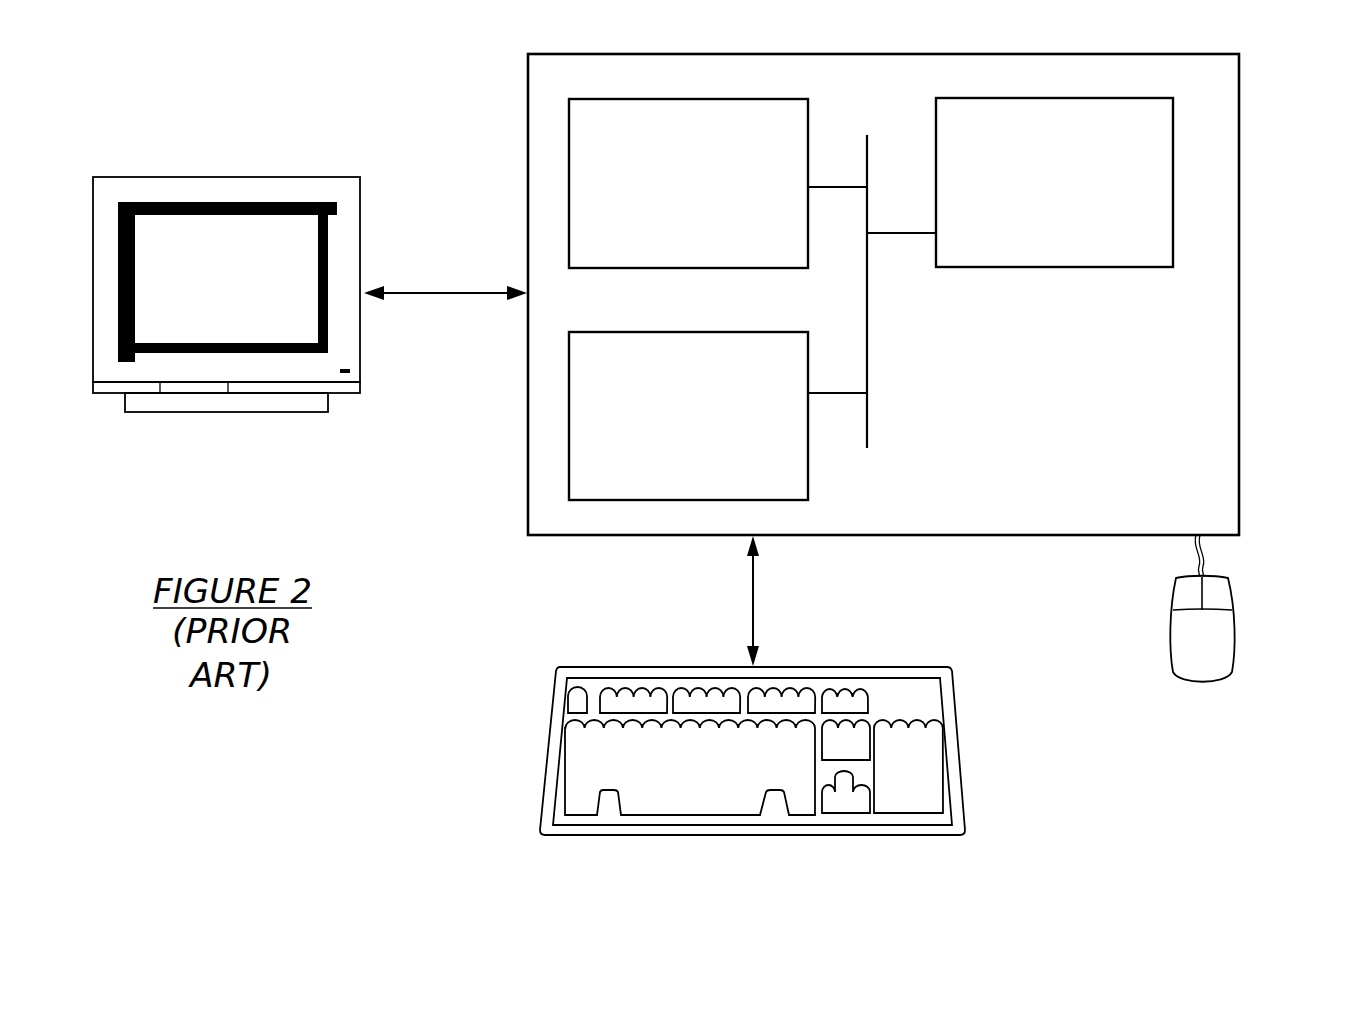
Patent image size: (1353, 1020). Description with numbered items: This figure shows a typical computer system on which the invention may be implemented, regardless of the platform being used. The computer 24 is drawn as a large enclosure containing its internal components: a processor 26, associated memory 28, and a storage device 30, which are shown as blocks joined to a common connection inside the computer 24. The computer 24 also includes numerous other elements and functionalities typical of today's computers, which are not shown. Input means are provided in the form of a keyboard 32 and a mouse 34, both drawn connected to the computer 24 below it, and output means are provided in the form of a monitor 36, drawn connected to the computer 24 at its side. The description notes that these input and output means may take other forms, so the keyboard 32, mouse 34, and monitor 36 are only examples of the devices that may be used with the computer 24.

The computer 24 is at (1246, 376).
The processor 26 is at (1056, 197).
The memory 28 is at (672, 198).
The storage device 30 is at (670, 432).
The keyboard 32 is at (686, 778).
The mouse 34 is at (1185, 656).
The monitor 36 is at (206, 309).